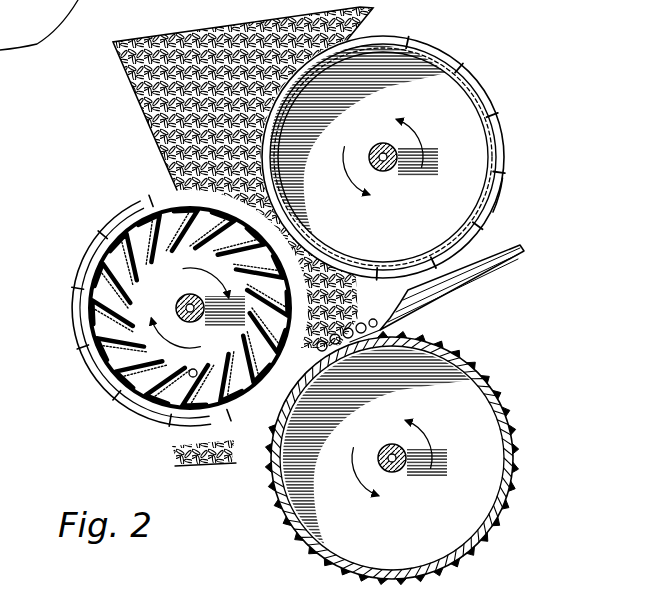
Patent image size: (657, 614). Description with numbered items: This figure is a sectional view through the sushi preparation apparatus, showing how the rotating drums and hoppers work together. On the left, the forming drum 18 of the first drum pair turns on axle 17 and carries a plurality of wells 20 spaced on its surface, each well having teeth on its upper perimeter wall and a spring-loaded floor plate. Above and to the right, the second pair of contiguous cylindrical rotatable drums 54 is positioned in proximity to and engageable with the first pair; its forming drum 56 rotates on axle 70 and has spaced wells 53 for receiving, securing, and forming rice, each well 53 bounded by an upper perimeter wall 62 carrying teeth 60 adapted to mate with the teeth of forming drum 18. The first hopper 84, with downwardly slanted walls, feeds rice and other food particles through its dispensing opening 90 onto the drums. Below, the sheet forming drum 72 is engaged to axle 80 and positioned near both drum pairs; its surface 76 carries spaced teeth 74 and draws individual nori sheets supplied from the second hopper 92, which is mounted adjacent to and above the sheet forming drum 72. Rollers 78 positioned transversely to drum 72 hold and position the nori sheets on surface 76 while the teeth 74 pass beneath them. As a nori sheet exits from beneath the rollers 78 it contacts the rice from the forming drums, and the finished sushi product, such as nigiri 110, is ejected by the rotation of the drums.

The axle 17 is at (186, 299).
The forming drum 18 is at (110, 217).
The wells 20 is at (82, 330).
The wells 53 is at (467, 15).
The second pair of contiguous cylindrical rotatable drums 54 is at (460, 147).
The forming drum 56 is at (478, 80).
The teeth 60 is at (492, 113).
The upper perimeter wall 62 is at (498, 200).
The axle 70 is at (380, 148).
The sheet forming drum 72 is at (467, 417).
The teeth 74 is at (280, 507).
The surface 76 is at (450, 350).
The rollers 78 is at (350, 327).
The axle 80 is at (398, 475).
The first hopper 84 is at (157, 125).
The dispensing opening 90 is at (197, 165).
The second hopper 92 is at (473, 300).
The nigiri 110 is at (175, 450).